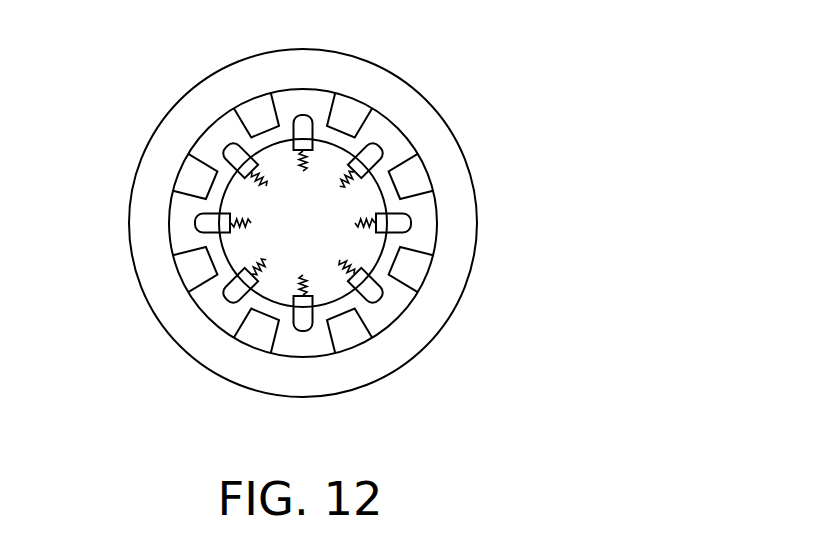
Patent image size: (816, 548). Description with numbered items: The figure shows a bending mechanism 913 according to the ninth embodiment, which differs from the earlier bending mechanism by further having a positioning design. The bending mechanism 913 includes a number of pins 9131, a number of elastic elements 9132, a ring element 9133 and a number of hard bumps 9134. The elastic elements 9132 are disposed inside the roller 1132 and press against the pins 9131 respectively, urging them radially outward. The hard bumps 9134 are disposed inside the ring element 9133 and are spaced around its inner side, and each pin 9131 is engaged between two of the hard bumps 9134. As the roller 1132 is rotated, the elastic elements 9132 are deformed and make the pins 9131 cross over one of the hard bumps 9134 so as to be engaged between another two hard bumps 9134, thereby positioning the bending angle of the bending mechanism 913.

The bending mechanism 913 is at (648, 42).
The ring element 9133 is at (440, 133).
The hard bumps 9134 is at (412, 175).
The pins 9131 is at (305, 223).
The elastic elements 9132 is at (345, 262).
The roller 1132 is at (230, 202).